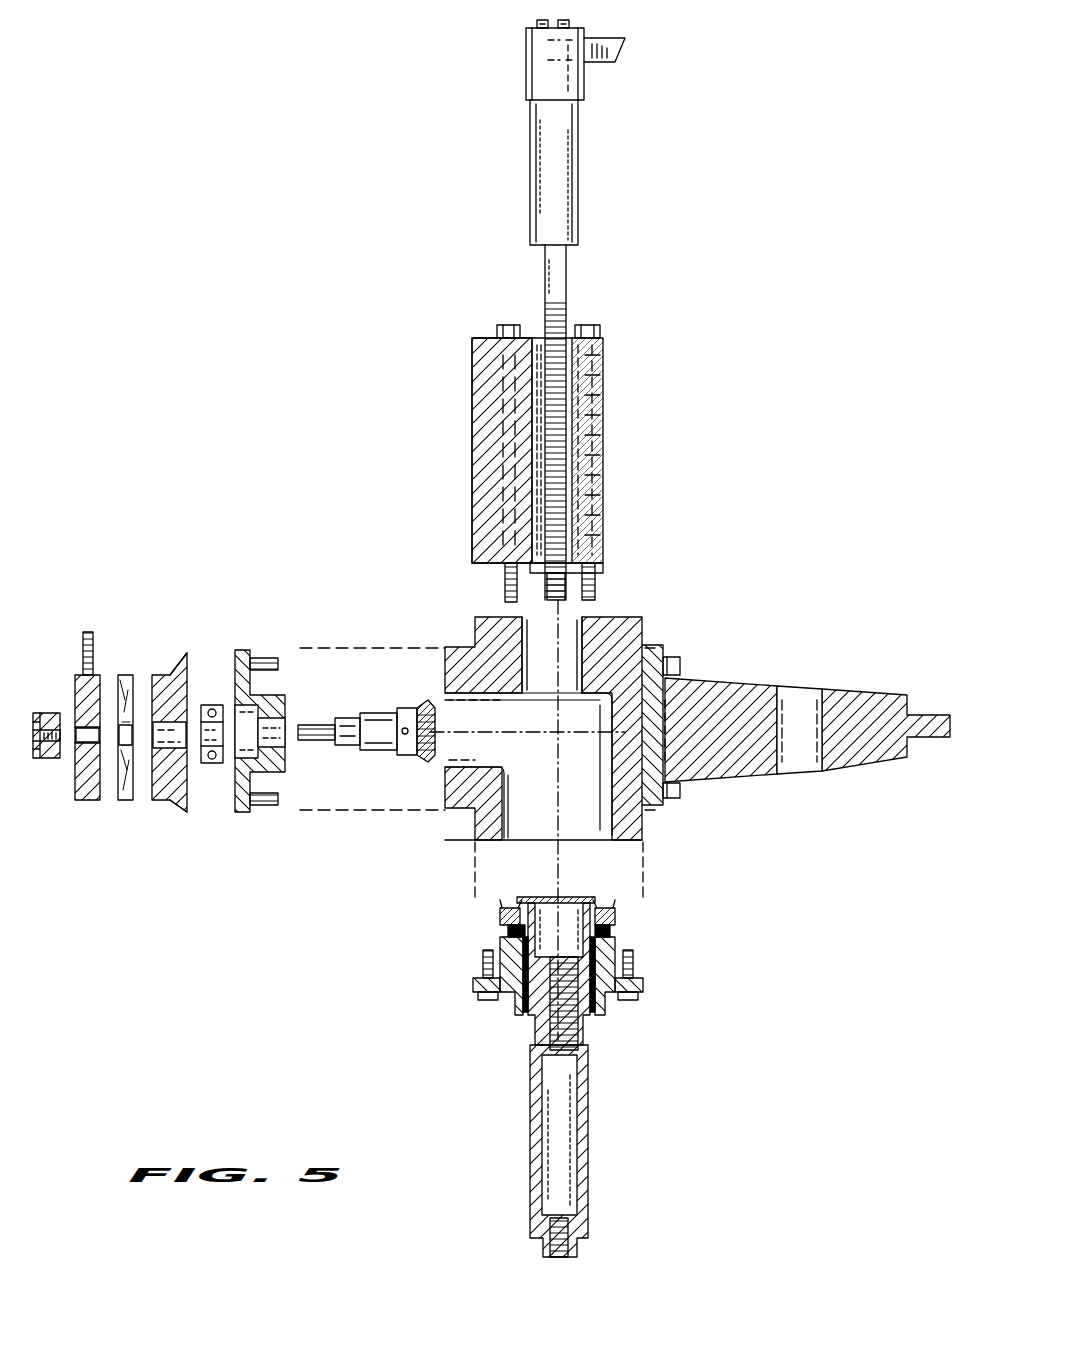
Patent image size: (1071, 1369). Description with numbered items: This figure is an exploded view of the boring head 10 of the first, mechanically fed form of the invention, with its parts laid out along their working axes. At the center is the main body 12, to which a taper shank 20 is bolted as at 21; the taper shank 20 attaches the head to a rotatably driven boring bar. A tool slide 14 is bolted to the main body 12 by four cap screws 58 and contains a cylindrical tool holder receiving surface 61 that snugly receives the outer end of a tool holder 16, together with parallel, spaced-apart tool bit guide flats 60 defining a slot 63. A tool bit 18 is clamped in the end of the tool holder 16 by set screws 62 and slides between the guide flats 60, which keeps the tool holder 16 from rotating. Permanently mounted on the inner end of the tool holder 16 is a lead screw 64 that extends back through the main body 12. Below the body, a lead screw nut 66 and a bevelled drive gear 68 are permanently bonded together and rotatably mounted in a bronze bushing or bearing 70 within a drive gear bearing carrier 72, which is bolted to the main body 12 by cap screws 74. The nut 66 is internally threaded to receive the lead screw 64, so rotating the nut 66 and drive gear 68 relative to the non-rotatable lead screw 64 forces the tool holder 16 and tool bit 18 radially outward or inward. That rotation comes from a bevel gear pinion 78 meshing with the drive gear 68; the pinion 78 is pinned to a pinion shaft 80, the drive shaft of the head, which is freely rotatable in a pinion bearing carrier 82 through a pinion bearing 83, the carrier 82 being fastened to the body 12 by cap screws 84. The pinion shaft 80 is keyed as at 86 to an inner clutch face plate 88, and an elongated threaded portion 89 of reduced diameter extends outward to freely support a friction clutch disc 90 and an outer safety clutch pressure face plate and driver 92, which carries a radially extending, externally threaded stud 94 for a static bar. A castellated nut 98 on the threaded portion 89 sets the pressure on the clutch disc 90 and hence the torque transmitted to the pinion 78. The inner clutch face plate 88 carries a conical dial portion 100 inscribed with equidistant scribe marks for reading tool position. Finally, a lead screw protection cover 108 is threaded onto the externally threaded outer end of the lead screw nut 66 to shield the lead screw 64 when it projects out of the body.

The boring head 10 is at (710, 566).
The main body 12 is at (640, 628).
The tool slide 14 is at (604, 430).
The tool holder 16 is at (584, 80).
The tool bit 18 is at (620, 52).
The taper shank 20 is at (745, 695).
The bolts 21 is at (678, 662).
The cap screws 58 is at (505, 580).
The tool bit guide flats 60 is at (596, 490).
The tool holder receiving surface 61 is at (575, 375).
The set screws 62 is at (560, 21).
The slot 63 is at (597, 460).
The lead screw 64 is at (565, 282).
The lead screw nut 66 is at (555, 955).
The bevelled drive gear 68 is at (540, 897).
The bronze bushing or bearing 70 is at (610, 930).
The drive gear bearing carrier 72 is at (645, 986).
The cap screws 74 is at (483, 962).
The bevel gear pinion 78 is at (425, 762).
The pinion shaft 80 is at (376, 713).
The pinion bearing carrier 82 is at (283, 700).
The pinion bearing 83 is at (212, 766).
The cap screws 84 is at (258, 665).
The key 86 is at (345, 728).
The inner clutch face plate 88 is at (165, 805).
The elongated threaded portion 89 is at (314, 742).
The friction clutch disc 90 is at (126, 673).
The outer safety clutch pressure face plate and driver 92 is at (90, 802).
The stud 94 is at (88, 632).
The castellated nut 98 is at (50, 712).
The conical dial portion 100 is at (180, 662).
The lead screw protection cover 108 is at (590, 1172).